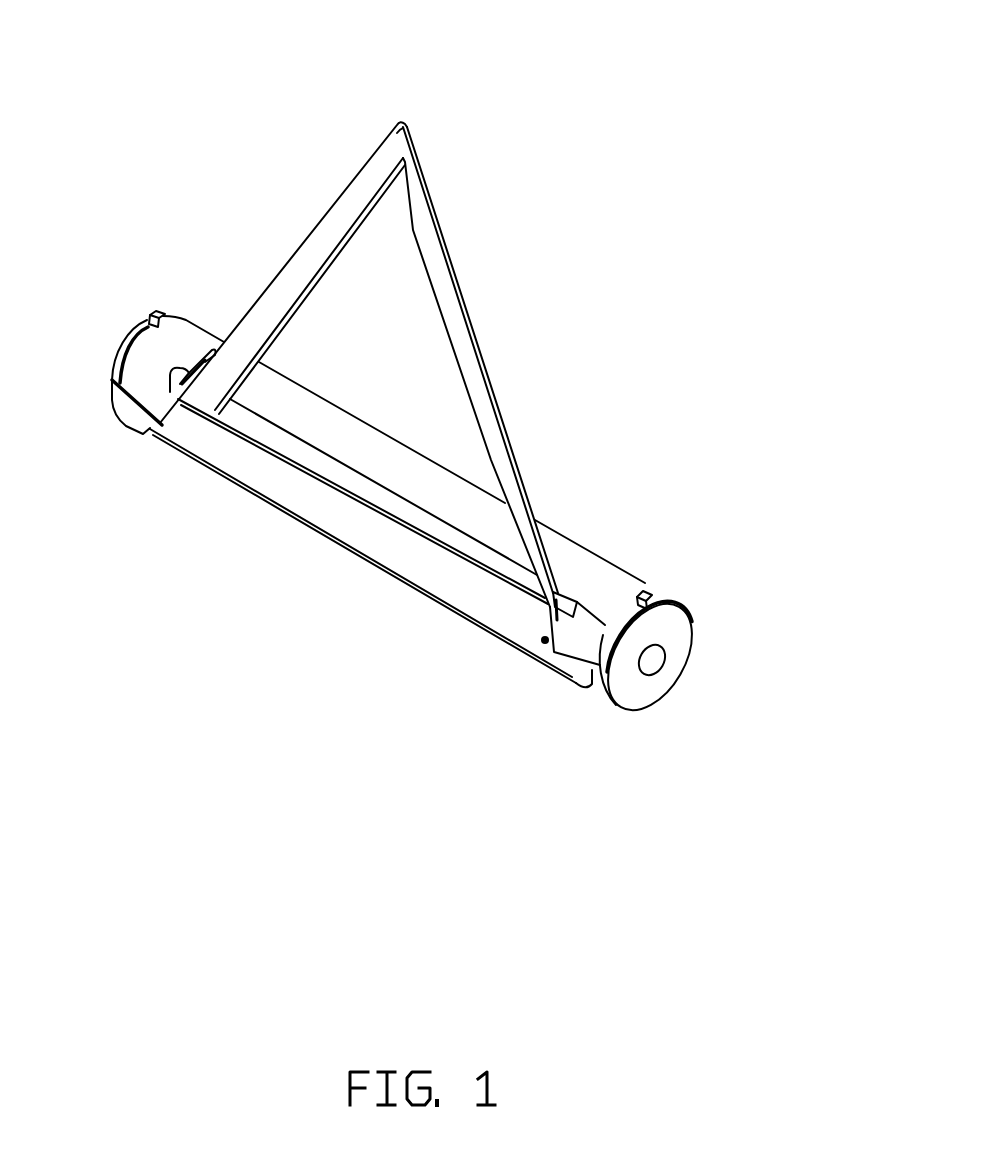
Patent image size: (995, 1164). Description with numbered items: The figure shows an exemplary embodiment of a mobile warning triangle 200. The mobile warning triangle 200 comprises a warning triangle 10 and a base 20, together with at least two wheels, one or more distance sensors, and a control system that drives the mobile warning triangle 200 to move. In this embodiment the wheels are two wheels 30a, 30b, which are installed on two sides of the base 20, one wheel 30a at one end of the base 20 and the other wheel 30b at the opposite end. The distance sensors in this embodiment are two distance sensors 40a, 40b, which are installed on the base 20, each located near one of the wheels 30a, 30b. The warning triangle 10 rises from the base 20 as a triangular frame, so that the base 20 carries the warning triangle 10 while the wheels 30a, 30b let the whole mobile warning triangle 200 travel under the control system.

The mobile warning triangle 200 is at (540, 94).
The warning triangle 10 is at (447, 276).
The base 20 is at (572, 546).
The wheel 30a is at (668, 680).
The wheel 30b is at (120, 406).
The distance sensor 40a is at (660, 592).
The distance sensor 40b is at (148, 316).